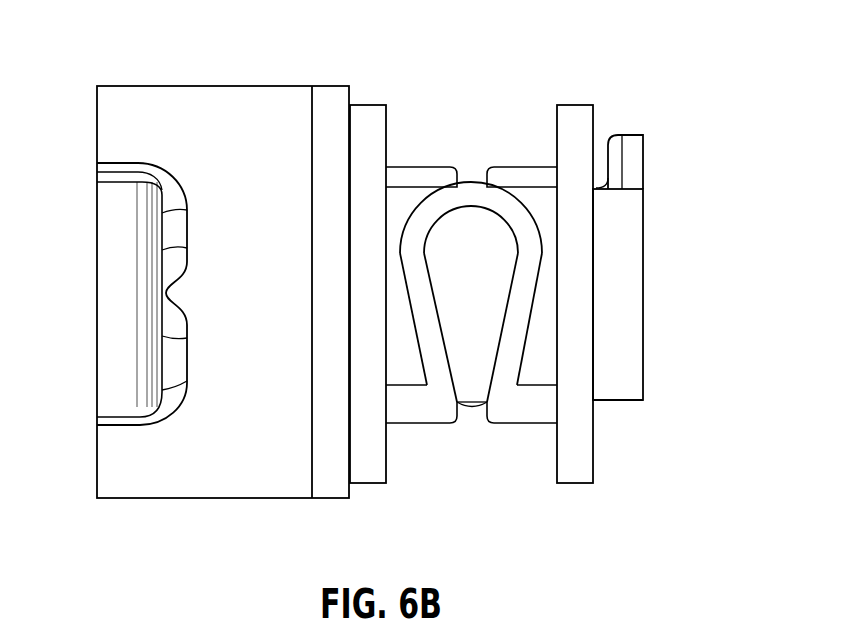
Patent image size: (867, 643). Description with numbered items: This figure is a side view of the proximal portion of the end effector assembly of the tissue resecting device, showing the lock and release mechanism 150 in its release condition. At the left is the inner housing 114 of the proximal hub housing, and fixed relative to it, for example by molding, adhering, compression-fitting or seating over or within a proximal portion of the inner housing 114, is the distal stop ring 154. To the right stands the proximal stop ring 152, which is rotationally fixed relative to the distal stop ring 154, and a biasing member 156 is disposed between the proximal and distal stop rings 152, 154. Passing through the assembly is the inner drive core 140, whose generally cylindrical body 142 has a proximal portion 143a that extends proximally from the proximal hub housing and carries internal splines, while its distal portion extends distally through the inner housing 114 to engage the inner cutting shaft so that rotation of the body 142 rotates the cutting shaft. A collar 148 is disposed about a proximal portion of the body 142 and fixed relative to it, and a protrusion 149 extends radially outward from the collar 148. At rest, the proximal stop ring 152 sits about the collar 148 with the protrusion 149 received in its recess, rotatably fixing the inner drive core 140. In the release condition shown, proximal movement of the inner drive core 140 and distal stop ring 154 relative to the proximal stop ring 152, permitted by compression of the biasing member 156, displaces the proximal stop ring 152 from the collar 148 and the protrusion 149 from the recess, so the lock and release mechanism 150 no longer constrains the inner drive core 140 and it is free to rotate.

The inner housing 114 is at (241, 95).
The distal stop ring 154 is at (366, 102).
The proximal stop ring 152 is at (575, 103).
The lock and release mechanism 150 is at (474, 277).
The biasing member 156 is at (508, 202).
The body 142 is at (529, 373).
The inner drive core 140 is at (468, 428).
The proximal portion 143a is at (623, 283).
The protrusion 149 is at (636, 153).
The collar 148 is at (622, 402).